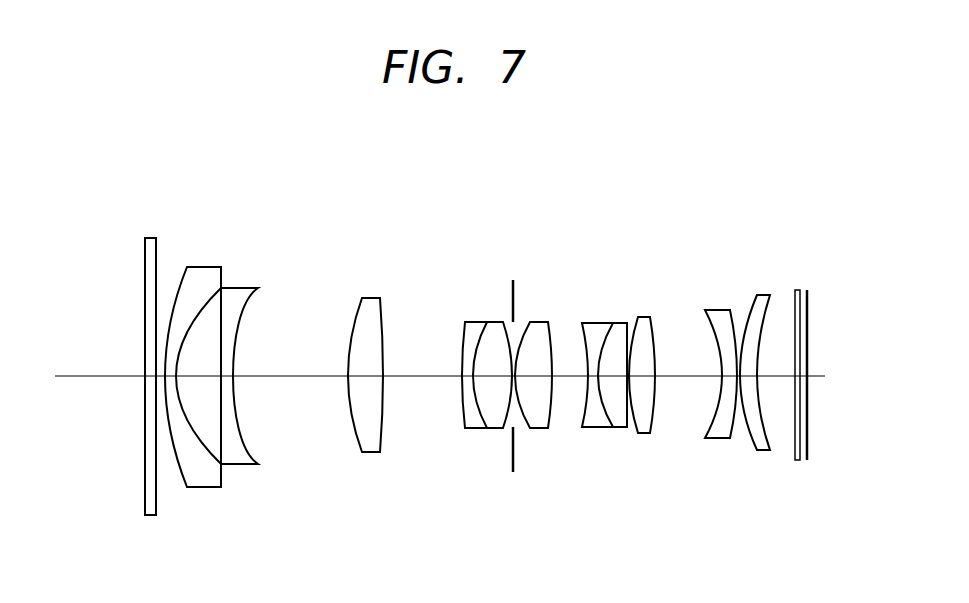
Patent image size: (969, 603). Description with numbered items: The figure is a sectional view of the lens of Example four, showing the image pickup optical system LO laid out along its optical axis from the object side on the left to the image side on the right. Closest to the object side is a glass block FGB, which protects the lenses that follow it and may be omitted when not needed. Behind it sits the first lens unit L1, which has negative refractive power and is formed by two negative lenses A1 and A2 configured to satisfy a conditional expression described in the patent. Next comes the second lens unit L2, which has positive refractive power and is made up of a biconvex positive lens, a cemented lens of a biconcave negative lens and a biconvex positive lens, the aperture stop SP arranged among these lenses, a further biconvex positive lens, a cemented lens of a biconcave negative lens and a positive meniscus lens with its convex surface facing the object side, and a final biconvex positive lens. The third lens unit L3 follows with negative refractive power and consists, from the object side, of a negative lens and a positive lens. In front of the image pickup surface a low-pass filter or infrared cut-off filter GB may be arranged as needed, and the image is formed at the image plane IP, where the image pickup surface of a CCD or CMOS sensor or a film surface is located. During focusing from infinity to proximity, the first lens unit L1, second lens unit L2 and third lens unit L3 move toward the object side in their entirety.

The image pickup optical system LO is at (770, 168).
The first lens unit L1 is at (257, 235).
The second lens unit L2 is at (655, 233).
The third lens unit L3 is at (770, 233).
The negative lens A1 is at (204, 494).
The negative lens A2 is at (247, 470).
The glass block FGB is at (143, 503).
The aperture stop SP is at (510, 284).
The low-pass filter or infrared cut-off filter GB is at (792, 452).
The image plane IP is at (808, 303).